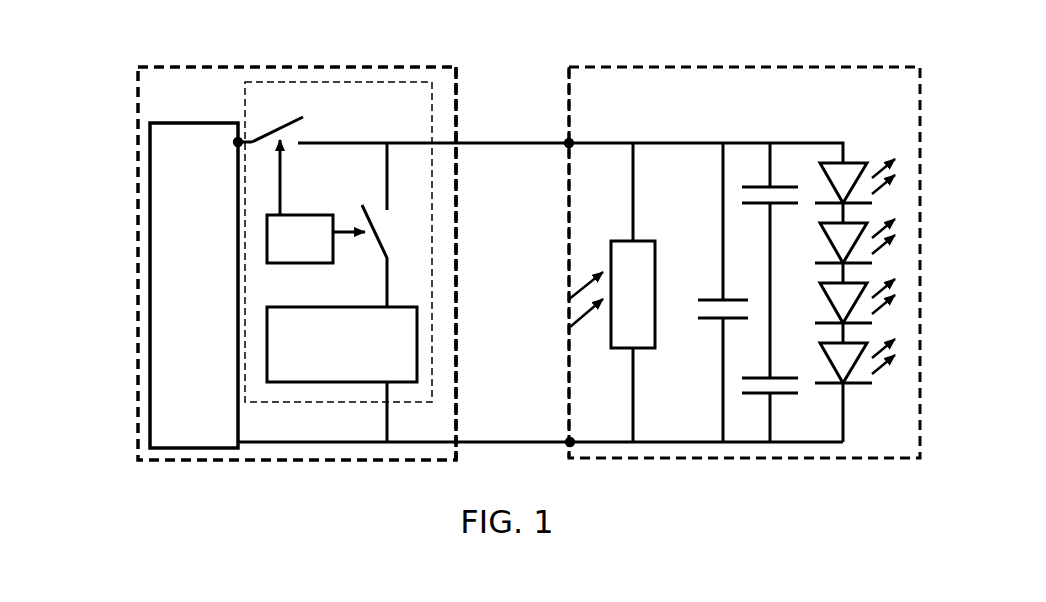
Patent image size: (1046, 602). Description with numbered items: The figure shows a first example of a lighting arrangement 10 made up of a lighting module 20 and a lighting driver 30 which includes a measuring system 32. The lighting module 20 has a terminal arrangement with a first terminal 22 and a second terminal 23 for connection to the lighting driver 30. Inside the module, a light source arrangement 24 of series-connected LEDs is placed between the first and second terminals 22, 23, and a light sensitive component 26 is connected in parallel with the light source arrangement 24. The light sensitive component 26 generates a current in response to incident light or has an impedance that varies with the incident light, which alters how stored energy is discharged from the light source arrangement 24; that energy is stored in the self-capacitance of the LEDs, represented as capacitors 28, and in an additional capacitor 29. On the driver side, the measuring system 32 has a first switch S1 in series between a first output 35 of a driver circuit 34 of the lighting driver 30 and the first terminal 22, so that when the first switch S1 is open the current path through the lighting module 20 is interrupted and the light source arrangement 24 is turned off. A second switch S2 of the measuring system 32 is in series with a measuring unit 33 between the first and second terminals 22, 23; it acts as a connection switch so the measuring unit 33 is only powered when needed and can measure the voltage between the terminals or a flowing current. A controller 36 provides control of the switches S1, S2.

The lighting arrangement 10 is at (110, 129).
The lighting module 20 is at (569, 120).
The first terminal 22 is at (567, 146).
The second terminal 23 is at (568, 441).
The light source arrangement 24 is at (864, 118).
The light sensitive component 26 is at (652, 272).
The capacitors 28 is at (782, 377).
The additional capacitor 29 is at (710, 318).
The lighting driver 30 is at (457, 108).
The measuring system 32 is at (432, 347).
The measuring unit 33 is at (302, 382).
The driver circuit 34 is at (205, 448).
The first output 35 is at (236, 143).
The controller 36 is at (295, 215).
The first switch S1 is at (280, 117).
The second switch S2 is at (386, 292).